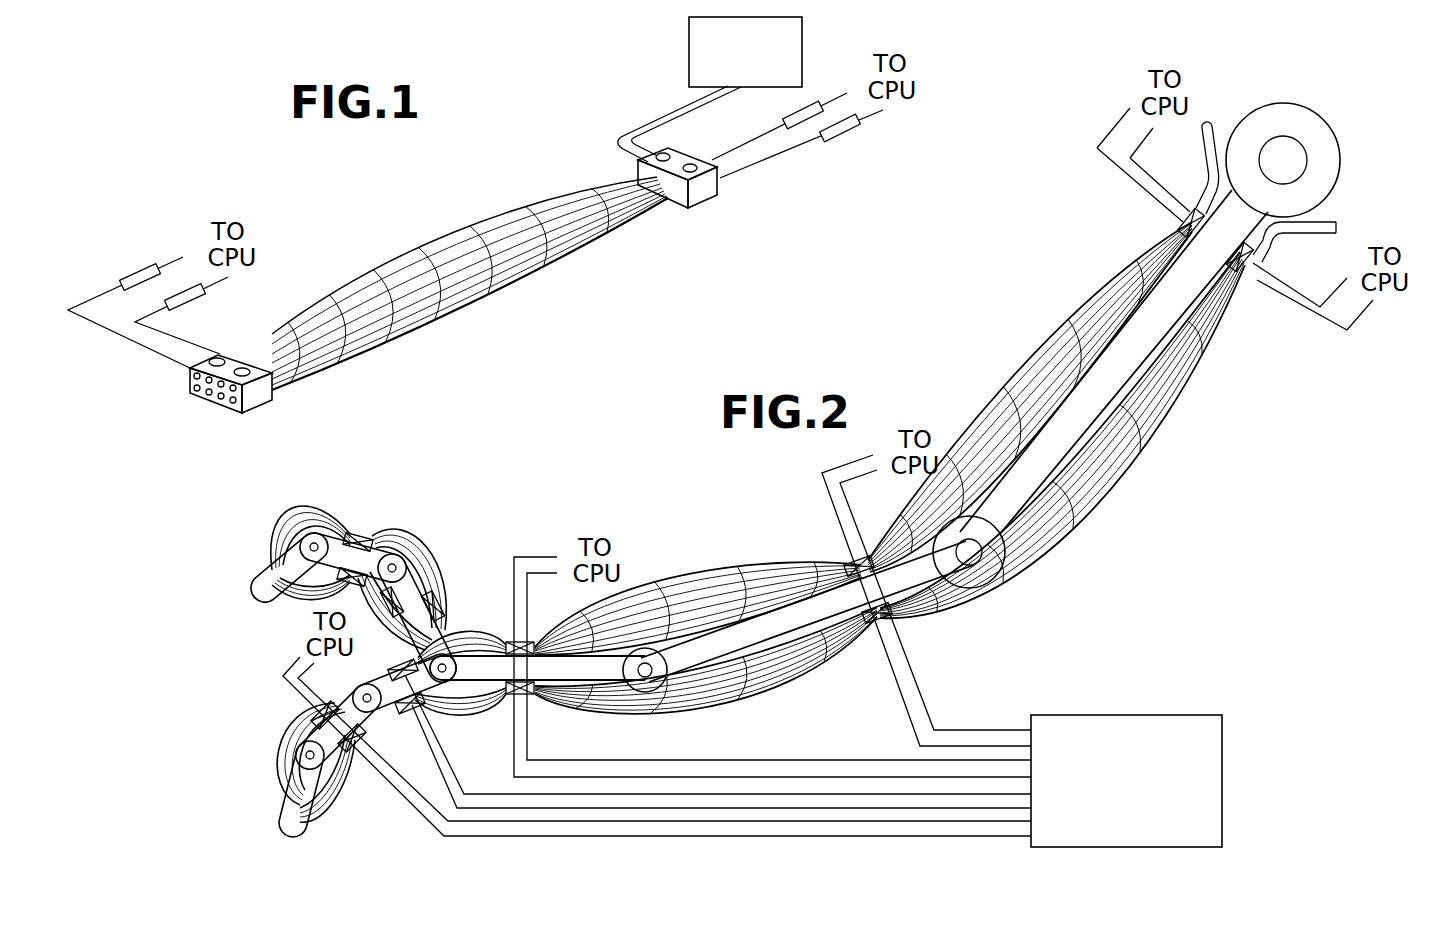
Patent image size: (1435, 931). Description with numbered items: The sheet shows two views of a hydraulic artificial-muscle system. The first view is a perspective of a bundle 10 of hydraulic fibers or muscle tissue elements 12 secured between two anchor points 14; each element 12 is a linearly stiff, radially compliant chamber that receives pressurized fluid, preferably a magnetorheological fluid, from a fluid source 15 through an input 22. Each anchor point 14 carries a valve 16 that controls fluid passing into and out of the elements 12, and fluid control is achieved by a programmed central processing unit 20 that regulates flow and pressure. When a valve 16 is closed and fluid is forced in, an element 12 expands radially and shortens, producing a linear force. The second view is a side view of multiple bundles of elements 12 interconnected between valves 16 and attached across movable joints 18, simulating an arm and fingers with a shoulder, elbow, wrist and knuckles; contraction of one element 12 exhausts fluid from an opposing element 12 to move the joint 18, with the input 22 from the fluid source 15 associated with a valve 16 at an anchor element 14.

In FIG. 1, the bundle 10 is at (405, 243).
In FIG. 2, the bundle 10 is at (285, 512).
In FIG. 1, the muscle tissue element 12 is at (500, 233).
In FIG. 1, the anchor point 14 is at (712, 190).
In FIG. 1, the fluid source 15 is at (689, 30).
In FIG. 2, the valve 16 is at (372, 530).
In FIG. 2, the movable joint 18 is at (316, 545).
In FIG. 2, the central processing unit 20 is at (1222, 805).
In FIG. 1, the input 22 is at (652, 122).
In FIG. 2, the input 22 is at (1215, 128).